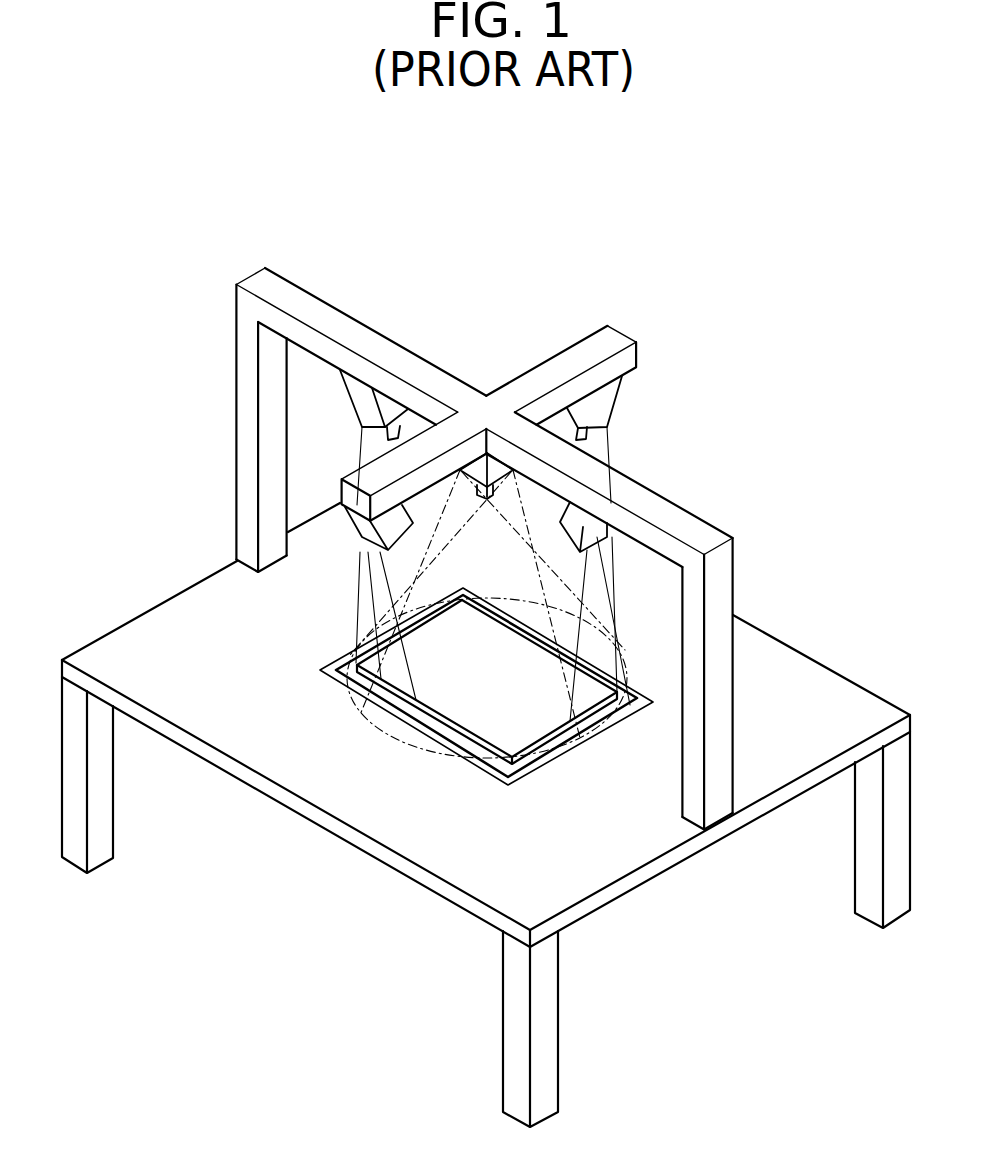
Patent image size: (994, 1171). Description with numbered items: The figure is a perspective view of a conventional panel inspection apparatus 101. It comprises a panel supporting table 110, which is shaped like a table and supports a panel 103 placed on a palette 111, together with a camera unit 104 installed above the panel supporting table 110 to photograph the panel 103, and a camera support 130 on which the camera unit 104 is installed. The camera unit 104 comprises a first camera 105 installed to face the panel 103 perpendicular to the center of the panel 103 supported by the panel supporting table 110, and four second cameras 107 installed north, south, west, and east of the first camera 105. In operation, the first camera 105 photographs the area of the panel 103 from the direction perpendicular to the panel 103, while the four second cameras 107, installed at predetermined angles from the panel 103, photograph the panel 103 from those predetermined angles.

The panel inspection apparatus 101 is at (722, 398).
The panel 103 is at (445, 703).
The camera unit 104 is at (513, 277).
The first camera 105 is at (478, 467).
The second cameras 107 is at (563, 513).
The panel supporting table 110 is at (390, 866).
The palette 111 is at (353, 697).
The camera support 130 is at (727, 578).